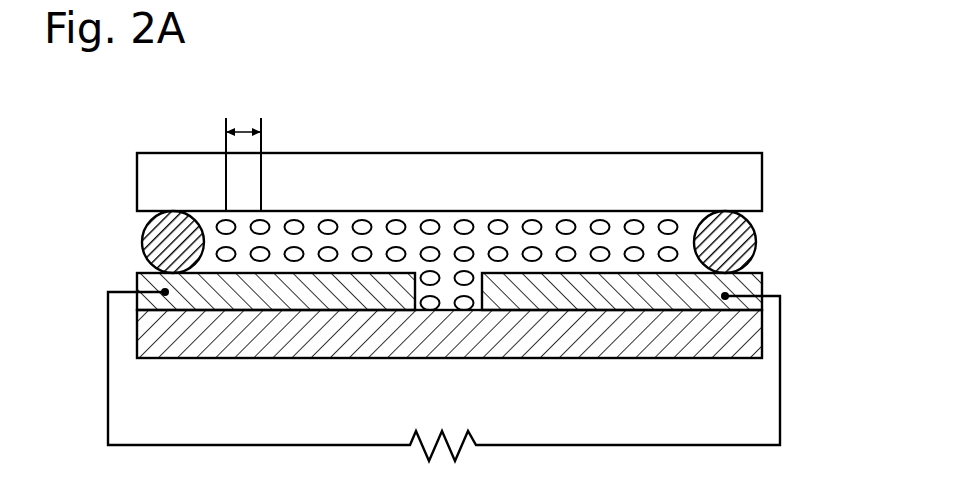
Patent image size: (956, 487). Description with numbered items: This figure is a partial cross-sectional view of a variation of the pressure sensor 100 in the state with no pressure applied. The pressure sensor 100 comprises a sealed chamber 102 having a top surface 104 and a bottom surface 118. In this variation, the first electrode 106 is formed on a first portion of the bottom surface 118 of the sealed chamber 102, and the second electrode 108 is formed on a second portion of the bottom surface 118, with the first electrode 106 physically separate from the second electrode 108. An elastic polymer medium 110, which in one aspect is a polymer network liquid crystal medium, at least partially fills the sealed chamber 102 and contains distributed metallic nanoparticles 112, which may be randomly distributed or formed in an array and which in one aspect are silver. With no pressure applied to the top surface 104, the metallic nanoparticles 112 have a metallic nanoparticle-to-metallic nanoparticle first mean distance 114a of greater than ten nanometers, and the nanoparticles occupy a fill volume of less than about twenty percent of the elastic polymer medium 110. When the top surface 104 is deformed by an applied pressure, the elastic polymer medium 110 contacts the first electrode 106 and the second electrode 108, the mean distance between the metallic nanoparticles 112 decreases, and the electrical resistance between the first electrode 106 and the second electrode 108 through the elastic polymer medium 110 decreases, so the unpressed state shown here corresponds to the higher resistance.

The pressure sensor 100 is at (725, 82).
The sealed chamber 102 is at (770, 153).
The top surface 104 is at (472, 195).
The first electrode 106 is at (172, 283).
The second electrode 108 is at (690, 278).
The elastic polymer medium 110 is at (345, 238).
The metallic nanoparticles 112 is at (566, 222).
The first mean distance 114a is at (243, 128).
The bottom surface 118 is at (162, 352).